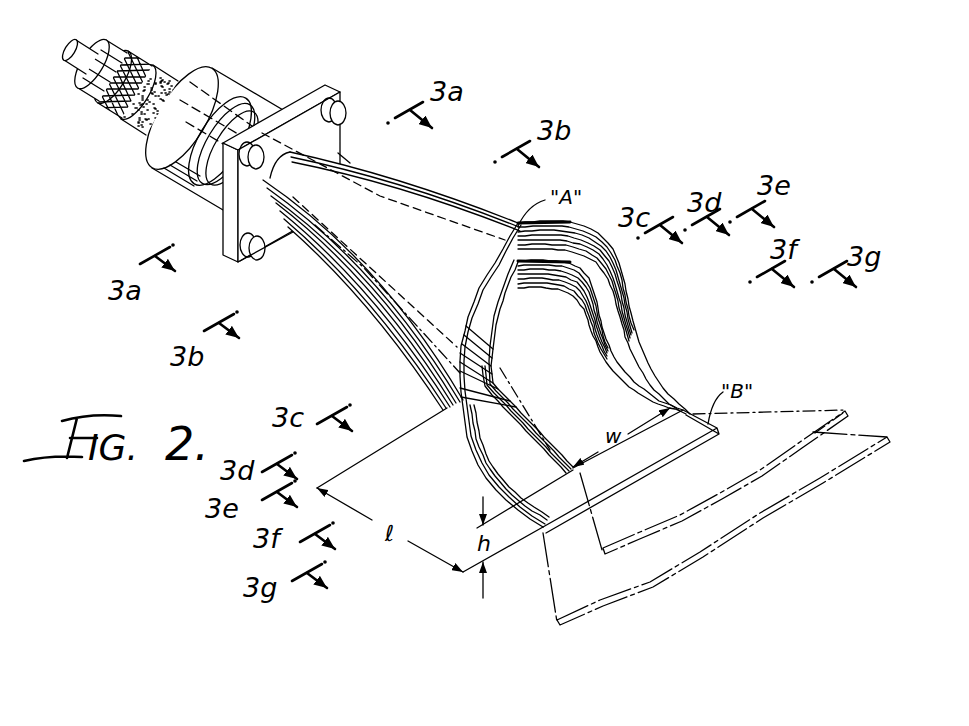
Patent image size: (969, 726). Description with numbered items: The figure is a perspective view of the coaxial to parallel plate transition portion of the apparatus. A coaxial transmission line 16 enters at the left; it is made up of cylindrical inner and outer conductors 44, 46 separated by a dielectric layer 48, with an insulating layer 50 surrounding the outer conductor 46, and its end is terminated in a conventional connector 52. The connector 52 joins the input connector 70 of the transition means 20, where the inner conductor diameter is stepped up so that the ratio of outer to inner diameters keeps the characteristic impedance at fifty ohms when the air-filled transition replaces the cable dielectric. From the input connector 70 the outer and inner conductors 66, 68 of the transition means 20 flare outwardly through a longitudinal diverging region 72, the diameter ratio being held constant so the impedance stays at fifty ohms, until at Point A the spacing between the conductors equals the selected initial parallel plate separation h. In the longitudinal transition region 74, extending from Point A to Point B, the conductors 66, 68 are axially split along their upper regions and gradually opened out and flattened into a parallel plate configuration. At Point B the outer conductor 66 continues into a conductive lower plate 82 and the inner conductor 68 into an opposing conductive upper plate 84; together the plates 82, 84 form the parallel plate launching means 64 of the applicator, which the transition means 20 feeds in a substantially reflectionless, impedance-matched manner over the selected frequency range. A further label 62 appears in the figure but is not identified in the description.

The transmission line 16 is at (178, 60).
The transition means 20 is at (606, 165).
The inner conductor 44 is at (174, 36).
The outer conductor 46 is at (88, 43).
The dielectric layer 48 is at (135, 40).
The insulating layer 50 is at (138, 118).
The connector 52 is at (229, 80).
The throat of horn 62 is at (297, 260).
The parallel plate launching means 64 is at (821, 360).
The outer conductor of transition means 66 is at (468, 208).
The inner conductor of transition means 68 is at (488, 294).
The transition means input connector 70 is at (322, 92).
The diverging region 72 is at (347, 323).
The transition region 74 is at (463, 468).
The conductive lower plate 82 is at (848, 434).
The conductive upper plate 84 is at (808, 410).